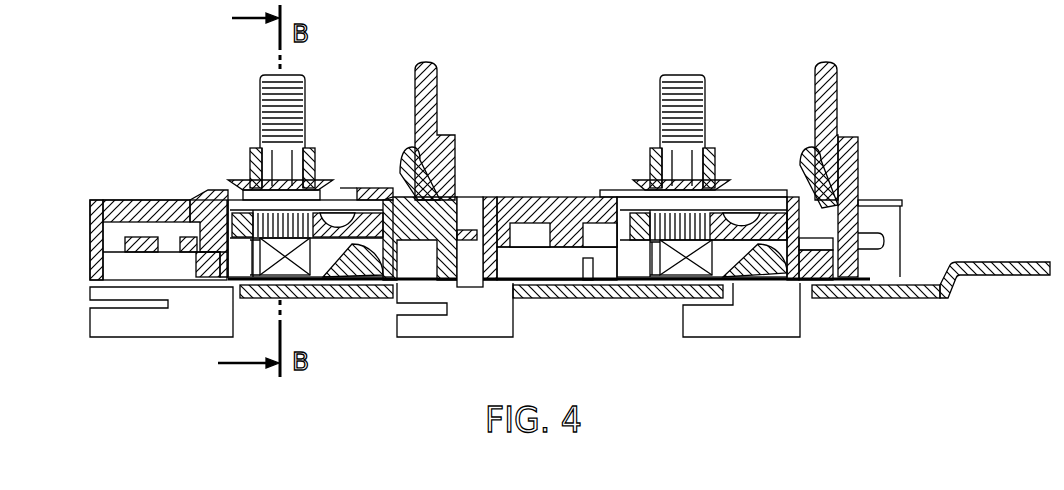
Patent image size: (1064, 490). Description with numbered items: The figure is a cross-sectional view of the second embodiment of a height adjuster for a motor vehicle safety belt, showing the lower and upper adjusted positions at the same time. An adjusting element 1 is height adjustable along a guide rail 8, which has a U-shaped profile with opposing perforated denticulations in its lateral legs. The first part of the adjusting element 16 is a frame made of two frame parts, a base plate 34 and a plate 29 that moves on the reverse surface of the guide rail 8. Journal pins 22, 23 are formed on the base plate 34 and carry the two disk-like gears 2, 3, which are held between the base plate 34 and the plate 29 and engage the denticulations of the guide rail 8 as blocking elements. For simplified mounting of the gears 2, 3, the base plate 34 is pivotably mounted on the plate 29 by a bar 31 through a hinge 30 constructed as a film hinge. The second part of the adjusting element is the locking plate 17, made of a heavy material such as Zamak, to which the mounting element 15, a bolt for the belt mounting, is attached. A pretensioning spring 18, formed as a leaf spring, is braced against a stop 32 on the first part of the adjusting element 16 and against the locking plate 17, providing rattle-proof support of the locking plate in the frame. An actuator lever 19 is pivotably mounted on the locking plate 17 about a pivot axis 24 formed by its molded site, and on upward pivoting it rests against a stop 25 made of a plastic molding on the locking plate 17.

The adjusting element 1 is at (341, 136).
The gear 2 is at (545, 205).
The gear 3 is at (537, 225).
The guide rail 8 is at (465, 200).
The mounting element 15 is at (270, 110).
The first part of the adjusting element 16 is at (607, 197).
The locking plate 17 is at (733, 220).
The pretensioning spring 18 is at (743, 262).
The actuator lever 19 is at (425, 88).
The journal pin 22 is at (572, 250).
The journal pin 23 is at (544, 237).
The pivot axis 24 is at (863, 215).
The stop 25 is at (858, 163).
The plate 29 is at (633, 280).
The hinge 30 is at (495, 237).
The bar 31 is at (493, 263).
The stop 32 is at (793, 258).
The base plate 34 is at (168, 197).